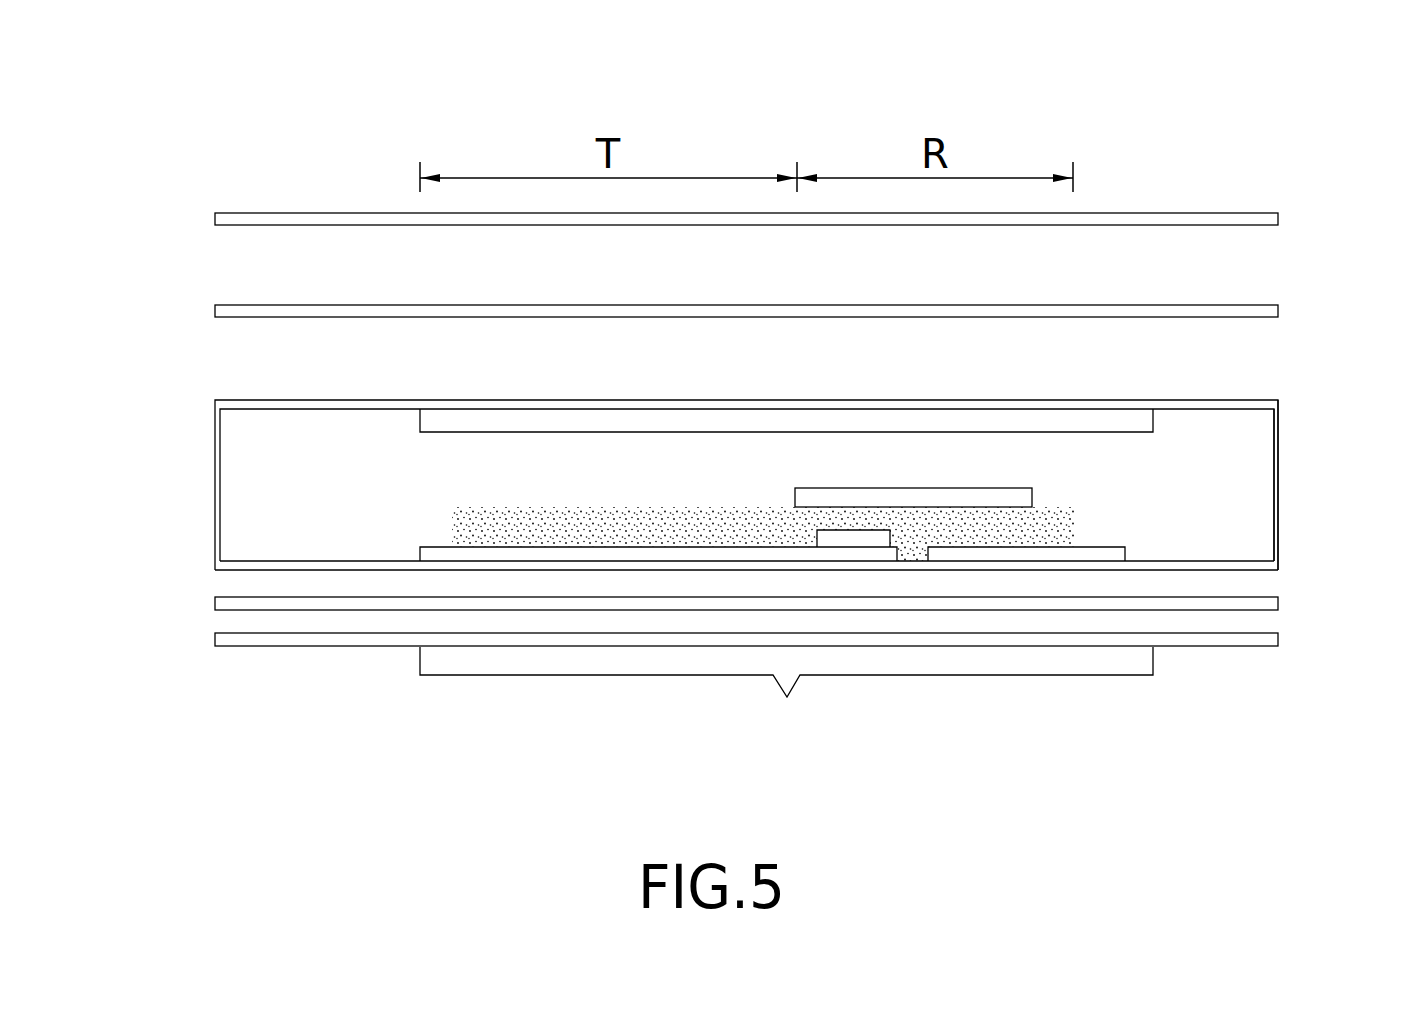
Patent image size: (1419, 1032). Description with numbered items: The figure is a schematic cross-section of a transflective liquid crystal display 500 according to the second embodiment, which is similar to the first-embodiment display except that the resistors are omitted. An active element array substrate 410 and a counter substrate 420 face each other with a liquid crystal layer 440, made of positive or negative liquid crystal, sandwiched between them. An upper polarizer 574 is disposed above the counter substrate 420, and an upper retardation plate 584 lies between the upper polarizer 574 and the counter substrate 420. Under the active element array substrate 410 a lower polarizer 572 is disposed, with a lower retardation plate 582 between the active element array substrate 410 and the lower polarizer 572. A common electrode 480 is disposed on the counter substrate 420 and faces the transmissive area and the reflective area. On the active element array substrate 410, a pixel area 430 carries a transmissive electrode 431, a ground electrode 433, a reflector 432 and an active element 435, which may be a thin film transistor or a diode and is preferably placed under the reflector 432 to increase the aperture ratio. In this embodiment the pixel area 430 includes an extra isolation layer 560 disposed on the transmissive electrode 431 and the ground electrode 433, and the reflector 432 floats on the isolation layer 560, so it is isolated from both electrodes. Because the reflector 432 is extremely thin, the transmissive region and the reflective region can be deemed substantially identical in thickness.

The transflective liquid crystal display 500 is at (104, 103).
The upper polarizer 574 is at (217, 214).
The upper retardation plate 584 is at (217, 307).
The counter substrate 420 is at (217, 402).
The common electrode 480 is at (420, 426).
The transmissive electrode 431 is at (420, 556).
The active element array substrate 410 is at (217, 568).
The reflector 432 is at (982, 497).
The active element 435 is at (853, 537).
The isolation layer 560 is at (1037, 525).
The ground electrode 433 is at (1110, 557).
The liquid crystal layer 440 is at (1283, 556).
The lower retardation plate 582 is at (1290, 598).
The lower polarizer 572 is at (1290, 634).
The pixel area 430 is at (786, 687).